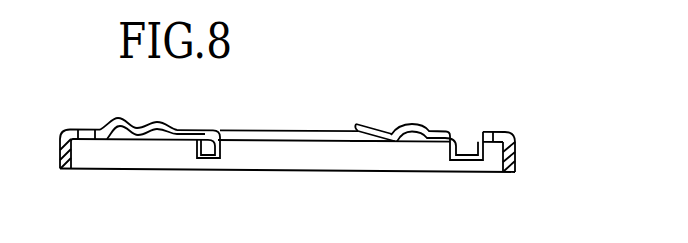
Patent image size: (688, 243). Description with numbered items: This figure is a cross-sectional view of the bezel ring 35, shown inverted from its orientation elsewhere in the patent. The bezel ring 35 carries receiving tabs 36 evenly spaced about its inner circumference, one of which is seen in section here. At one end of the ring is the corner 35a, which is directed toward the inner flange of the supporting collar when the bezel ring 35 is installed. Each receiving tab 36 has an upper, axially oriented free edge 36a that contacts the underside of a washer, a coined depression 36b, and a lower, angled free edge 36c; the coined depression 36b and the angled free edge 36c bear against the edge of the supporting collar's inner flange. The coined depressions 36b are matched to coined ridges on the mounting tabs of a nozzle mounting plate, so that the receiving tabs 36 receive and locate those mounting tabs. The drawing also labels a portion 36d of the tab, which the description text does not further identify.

The bezel ring 35 is at (302, 132).
The corner of the bezel ring 35a is at (58, 139).
The receiving tabs 36 is at (304, 145).
The upper, axially oriented free edges 36a is at (446, 152).
The coined depressions 36b is at (421, 127).
The lower, angled free edges 36c is at (362, 126).
The base portion of spring 36d is at (357, 141).